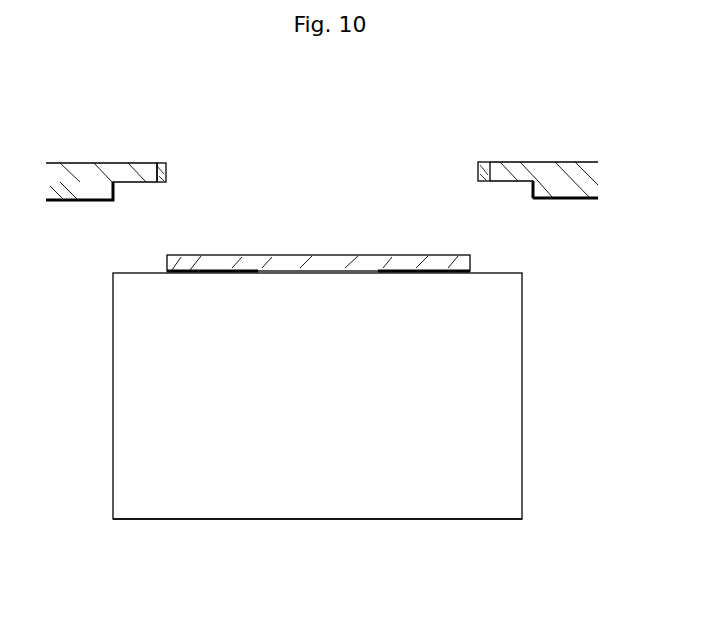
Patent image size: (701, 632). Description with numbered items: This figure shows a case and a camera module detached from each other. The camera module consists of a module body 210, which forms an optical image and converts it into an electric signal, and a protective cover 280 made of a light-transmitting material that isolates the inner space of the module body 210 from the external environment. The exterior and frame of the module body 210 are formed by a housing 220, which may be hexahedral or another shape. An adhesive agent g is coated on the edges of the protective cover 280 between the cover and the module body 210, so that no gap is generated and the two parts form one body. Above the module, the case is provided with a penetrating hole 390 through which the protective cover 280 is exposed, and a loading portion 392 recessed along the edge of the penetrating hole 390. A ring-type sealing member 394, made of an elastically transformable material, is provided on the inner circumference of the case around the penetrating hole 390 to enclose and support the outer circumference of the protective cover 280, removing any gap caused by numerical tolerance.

The penetrating hole 390 is at (167, 172).
The loading portion 392 is at (505, 182).
The sealing member 394 is at (478, 172).
The protective cover 280 is at (433, 263).
The adhesive agent g is at (200, 270).
The housing 220 is at (508, 370).
The module body 210 is at (318, 521).